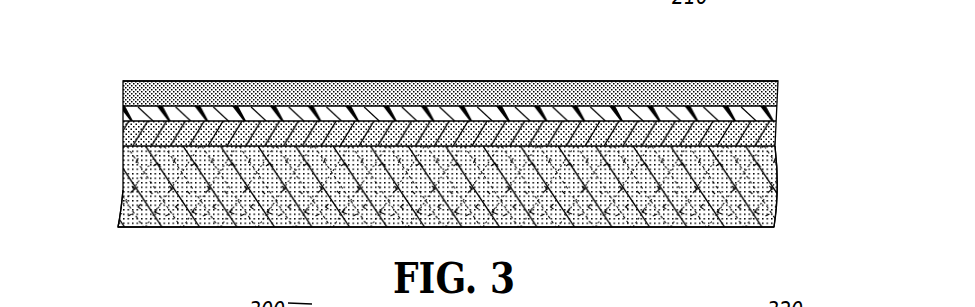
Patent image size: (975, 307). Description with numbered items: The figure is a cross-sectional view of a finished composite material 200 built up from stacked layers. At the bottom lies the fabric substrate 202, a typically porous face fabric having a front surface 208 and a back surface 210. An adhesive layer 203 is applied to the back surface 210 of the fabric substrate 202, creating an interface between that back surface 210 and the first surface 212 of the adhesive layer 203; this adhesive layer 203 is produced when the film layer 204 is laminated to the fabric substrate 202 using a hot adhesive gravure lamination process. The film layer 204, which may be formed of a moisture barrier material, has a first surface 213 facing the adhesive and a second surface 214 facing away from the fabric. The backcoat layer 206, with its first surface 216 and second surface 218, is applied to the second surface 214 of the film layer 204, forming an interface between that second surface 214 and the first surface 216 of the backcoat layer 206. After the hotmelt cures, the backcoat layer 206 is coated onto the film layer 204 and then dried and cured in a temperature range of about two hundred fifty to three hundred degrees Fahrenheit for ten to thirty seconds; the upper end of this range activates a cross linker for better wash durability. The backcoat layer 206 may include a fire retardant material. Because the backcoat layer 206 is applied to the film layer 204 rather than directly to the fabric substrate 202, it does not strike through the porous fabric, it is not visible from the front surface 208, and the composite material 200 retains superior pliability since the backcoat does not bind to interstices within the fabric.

The finished composite material 200 is at (368, 58).
The fabric substrate 202 is at (752, 227).
The adhesive layer 203 is at (773, 137).
The film layer 204 is at (778, 117).
The backcoat layer 206 is at (733, 80).
The front surface 208 is at (135, 228).
The back surface 210 is at (140, 162).
The first surface 212 is at (706, 210).
The first surface 213 is at (142, 132).
The second surface 214 is at (774, 148).
The first surface 216 is at (143, 101).
The second surface 218 is at (140, 80).